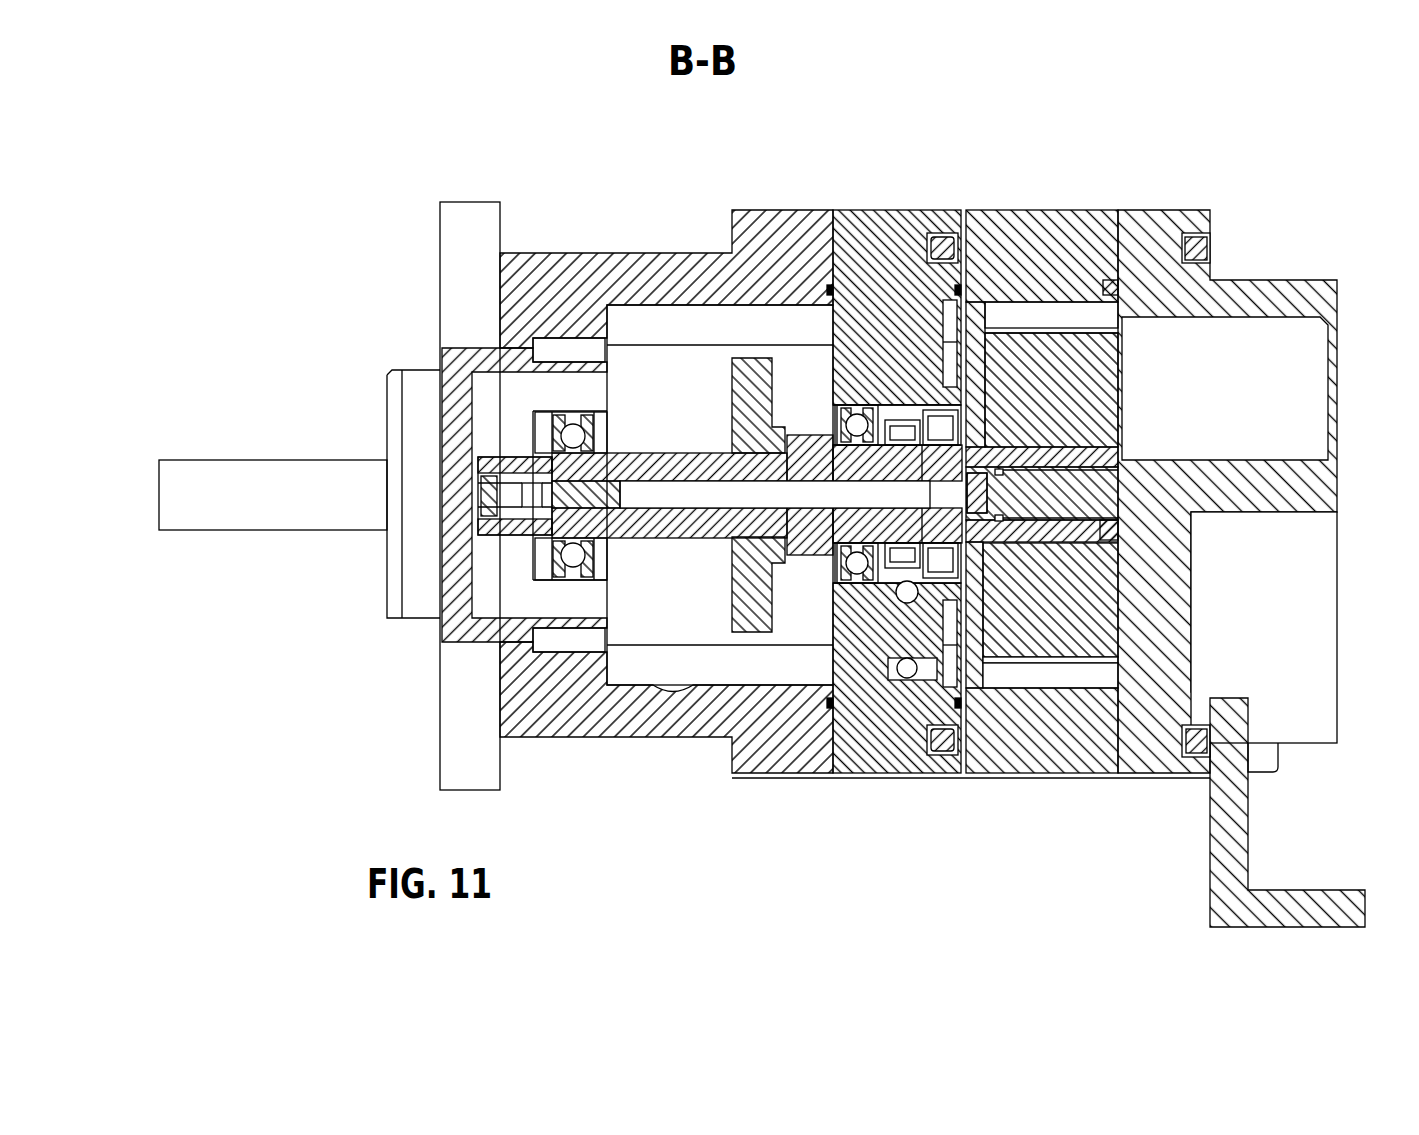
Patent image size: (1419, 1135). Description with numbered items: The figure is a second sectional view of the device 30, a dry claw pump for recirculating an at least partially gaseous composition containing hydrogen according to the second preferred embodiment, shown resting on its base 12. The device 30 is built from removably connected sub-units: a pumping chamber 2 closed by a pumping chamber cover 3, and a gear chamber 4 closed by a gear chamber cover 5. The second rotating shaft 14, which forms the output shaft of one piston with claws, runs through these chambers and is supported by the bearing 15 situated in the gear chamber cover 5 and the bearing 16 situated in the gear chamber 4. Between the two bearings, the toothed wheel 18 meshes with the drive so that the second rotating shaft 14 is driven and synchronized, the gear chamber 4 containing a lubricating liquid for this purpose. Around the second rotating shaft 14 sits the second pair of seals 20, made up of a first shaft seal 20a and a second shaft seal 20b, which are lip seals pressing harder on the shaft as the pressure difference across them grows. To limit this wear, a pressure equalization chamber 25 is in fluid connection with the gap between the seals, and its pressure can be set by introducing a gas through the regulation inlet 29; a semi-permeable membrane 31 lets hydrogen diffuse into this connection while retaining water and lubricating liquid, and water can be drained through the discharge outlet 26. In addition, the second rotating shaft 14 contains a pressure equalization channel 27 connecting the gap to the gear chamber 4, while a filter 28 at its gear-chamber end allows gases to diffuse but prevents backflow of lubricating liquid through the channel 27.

The pumping chamber 2 is at (1068, 225).
The pumping chamber cover 3 is at (1150, 225).
The gear chamber 4 is at (792, 223).
The gear chamber cover 5 is at (897, 413).
The base 12 is at (1318, 905).
The second rotating shaft 14 is at (627, 524).
The bearing 15 is at (857, 405).
The bearing 16 is at (533, 637).
The toothed wheel 18 is at (747, 592).
The second pair of seals 20 is at (984, 341).
The first shaft seal 20a is at (945, 407).
The second shaft seal 20b is at (932, 403).
The pressure equalization chamber 25 is at (937, 607).
The discharge outlet 26 is at (900, 676).
The pressure equalization channel 27 is at (678, 498).
The filter 28 is at (503, 530).
The regulation inlet 29 is at (905, 594).
The device 30 is at (768, 494).
The semi-permeable membrane 31 is at (975, 515).